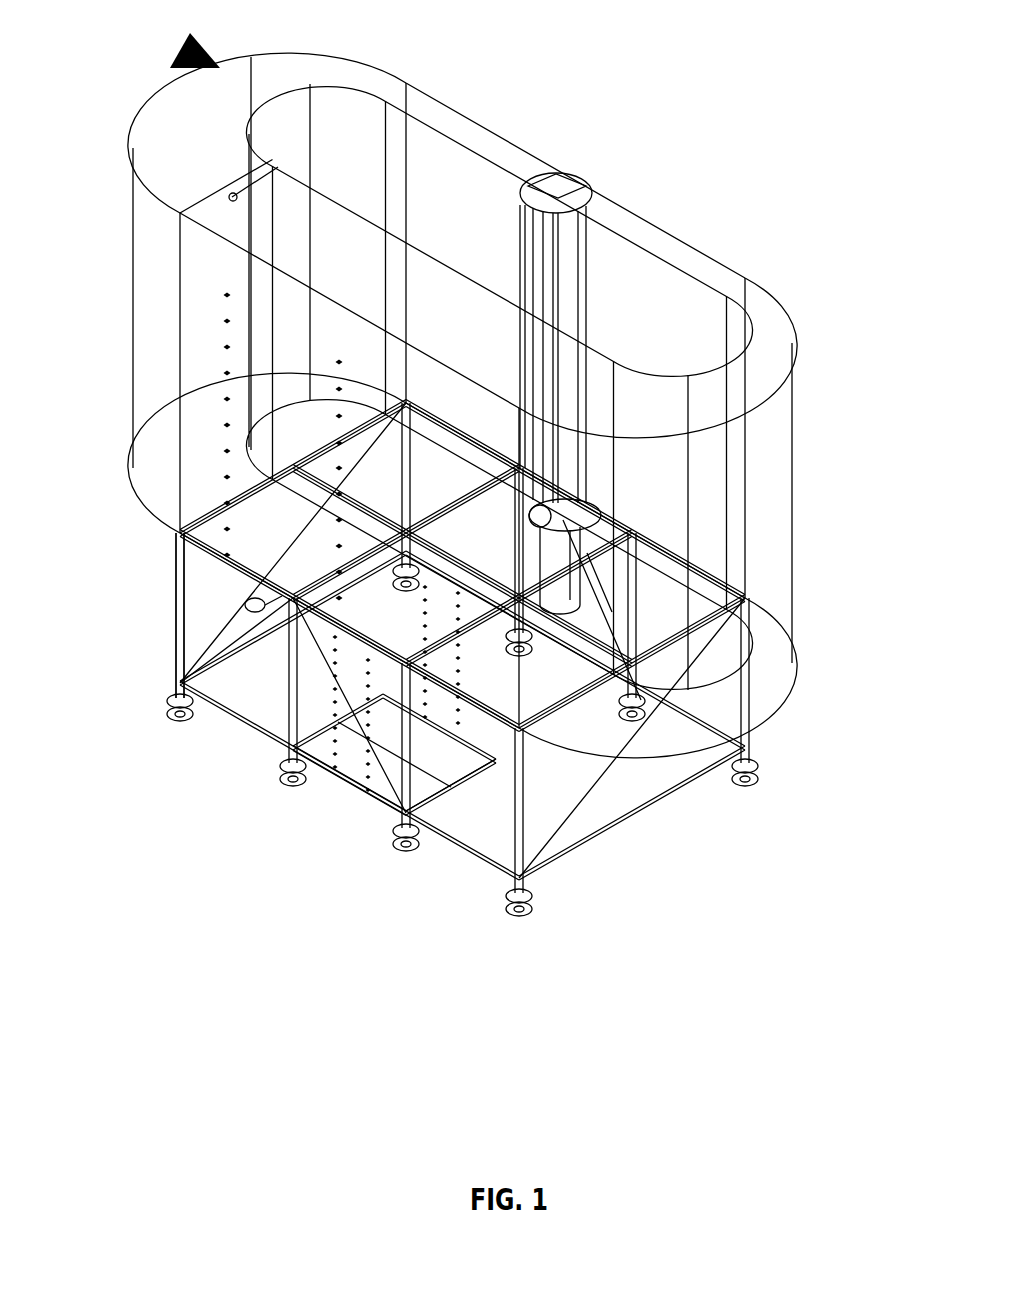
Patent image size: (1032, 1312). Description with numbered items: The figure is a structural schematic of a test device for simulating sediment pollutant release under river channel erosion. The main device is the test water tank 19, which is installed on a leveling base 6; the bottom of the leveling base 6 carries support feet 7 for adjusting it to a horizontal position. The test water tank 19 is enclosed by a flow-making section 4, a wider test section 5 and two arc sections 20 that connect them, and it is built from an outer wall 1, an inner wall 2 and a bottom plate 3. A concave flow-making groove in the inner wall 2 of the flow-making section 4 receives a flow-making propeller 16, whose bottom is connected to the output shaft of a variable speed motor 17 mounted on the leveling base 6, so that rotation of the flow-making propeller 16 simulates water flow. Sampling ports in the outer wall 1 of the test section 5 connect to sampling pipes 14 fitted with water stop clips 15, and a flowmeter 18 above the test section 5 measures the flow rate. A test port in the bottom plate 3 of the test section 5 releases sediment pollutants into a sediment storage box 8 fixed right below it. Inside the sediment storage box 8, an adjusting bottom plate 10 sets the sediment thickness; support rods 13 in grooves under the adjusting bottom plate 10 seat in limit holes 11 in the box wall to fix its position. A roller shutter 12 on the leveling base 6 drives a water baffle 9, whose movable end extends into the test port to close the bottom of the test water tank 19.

The outer wall 1 is at (147, 197).
The inner wall 2 is at (250, 130).
The bottom plate 3 is at (160, 470).
The flow-making section 4 is at (700, 262).
The test section 5 is at (430, 280).
The leveling base 6 is at (178, 680).
The support feet 7 is at (176, 713).
The sediment storage box 8 is at (322, 680).
The water baffle 9 is at (470, 547).
The adjusting bottom plate 10 is at (398, 808).
The limit holes 11 is at (480, 770).
The roller shutter 12 is at (245, 603).
The support rods 13 is at (365, 752).
The sampling pipes 14 is at (222, 327).
The water stop clips 15 is at (223, 297).
The flow-making propeller 16 is at (570, 190).
The variable speed motor 17 is at (608, 512).
The flowmeter 18 is at (225, 195).
The test water tank 19 is at (172, 50).
The arc sections 20 is at (763, 367).